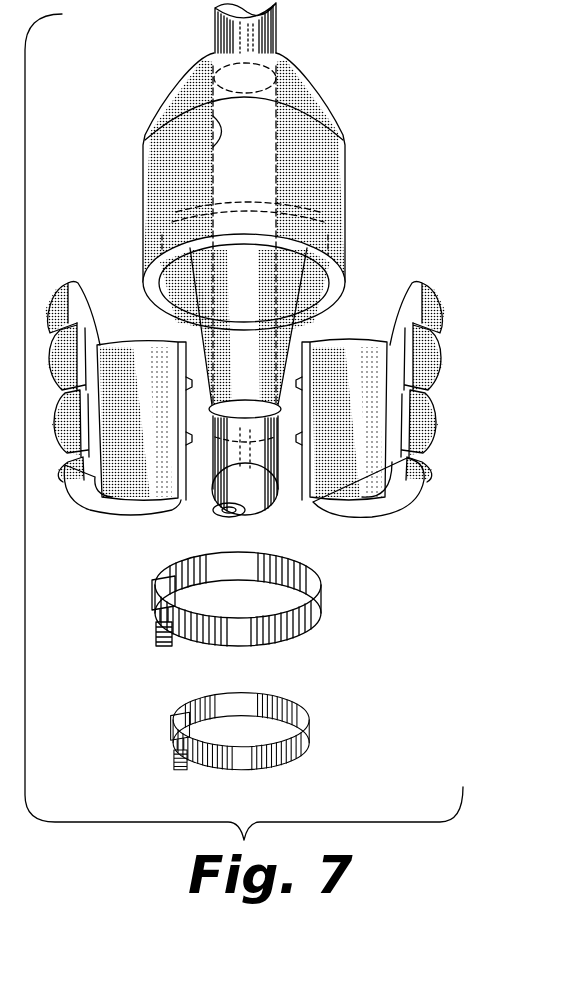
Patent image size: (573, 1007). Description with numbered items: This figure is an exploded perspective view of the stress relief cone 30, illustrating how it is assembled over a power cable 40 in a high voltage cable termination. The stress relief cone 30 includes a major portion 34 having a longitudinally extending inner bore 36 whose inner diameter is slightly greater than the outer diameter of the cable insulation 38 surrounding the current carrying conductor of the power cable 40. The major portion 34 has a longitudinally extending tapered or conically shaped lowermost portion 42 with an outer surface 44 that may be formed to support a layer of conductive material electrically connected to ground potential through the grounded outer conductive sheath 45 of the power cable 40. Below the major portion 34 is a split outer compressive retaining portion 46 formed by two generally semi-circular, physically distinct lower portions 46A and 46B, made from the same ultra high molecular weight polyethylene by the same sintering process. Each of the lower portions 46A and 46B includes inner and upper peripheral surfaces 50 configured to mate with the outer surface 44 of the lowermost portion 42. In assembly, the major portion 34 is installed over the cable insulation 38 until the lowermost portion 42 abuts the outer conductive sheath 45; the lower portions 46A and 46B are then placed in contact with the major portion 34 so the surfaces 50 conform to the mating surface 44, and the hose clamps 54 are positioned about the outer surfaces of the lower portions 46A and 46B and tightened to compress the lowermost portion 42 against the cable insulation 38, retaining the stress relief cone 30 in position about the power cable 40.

The stress relief cone 30 is at (395, 141).
The major portion 34 is at (345, 182).
The inner bore 36 is at (213, 122).
The cable insulation 38 is at (239, 278).
The power cable 40 is at (205, 514).
The lowermost portion 42 is at (293, 334).
The outer surface 44 is at (195, 336).
The outer conductive sheath 45 is at (260, 512).
The outer compressive retaining portion 46 is at (248, 518).
The lower portion 46A is at (87, 495).
The lower portion 46B is at (397, 500).
The inner and upper peripheral surfaces 50 is at (93, 300).
The hose clamps 54 is at (325, 624).